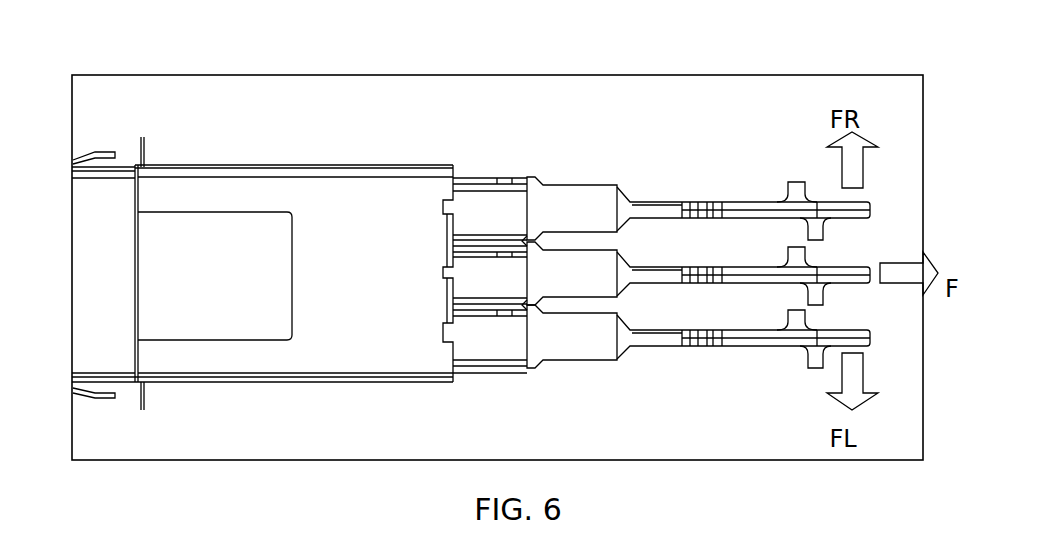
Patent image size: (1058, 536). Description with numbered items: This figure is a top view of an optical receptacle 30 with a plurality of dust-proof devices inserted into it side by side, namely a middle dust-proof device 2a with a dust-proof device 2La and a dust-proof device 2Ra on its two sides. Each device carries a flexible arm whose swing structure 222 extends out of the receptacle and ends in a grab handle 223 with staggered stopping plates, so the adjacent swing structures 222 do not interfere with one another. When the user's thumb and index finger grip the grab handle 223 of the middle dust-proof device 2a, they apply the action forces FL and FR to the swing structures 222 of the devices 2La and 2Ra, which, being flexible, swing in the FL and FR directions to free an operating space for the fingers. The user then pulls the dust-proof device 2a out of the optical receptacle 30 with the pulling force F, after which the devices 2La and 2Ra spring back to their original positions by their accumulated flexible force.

The optical receptacle 30 is at (297, 197).
The dust-proof device 2Ra is at (658, 203).
The dust-proof device 2La is at (665, 343).
The swing structure 222 is at (731, 235).
The grab handle 223 is at (731, 230).
The dust-proof device 2a is at (863, 275).